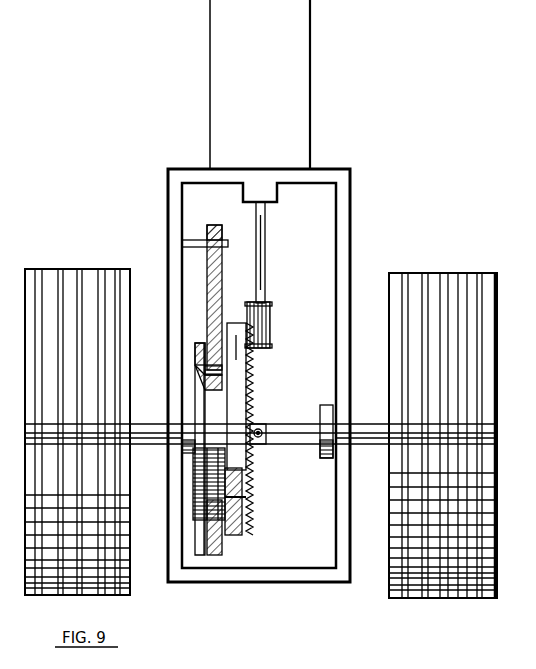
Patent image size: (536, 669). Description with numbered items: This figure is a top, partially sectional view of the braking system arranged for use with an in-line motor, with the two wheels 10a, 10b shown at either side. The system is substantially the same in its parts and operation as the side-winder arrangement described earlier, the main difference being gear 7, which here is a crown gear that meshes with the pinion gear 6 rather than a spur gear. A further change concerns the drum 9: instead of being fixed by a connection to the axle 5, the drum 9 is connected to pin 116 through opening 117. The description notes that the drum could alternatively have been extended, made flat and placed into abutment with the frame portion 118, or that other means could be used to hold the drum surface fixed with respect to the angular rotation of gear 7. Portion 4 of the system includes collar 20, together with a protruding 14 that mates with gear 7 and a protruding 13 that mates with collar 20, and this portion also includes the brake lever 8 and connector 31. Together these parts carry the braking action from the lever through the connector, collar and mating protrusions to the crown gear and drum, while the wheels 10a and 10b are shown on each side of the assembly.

The portion 4 is at (293, 48).
The frame portion 118 is at (203, 176).
The pin 116 is at (193, 243).
The opening 117 is at (222, 240).
The axle 5 is at (265, 258).
The drum 9 is at (222, 287).
The protruding 13 is at (200, 343).
The pinion gear 6 is at (270, 322).
The brake lever 8 is at (223, 392).
The gear 7 is at (246, 388).
The connector 31 is at (262, 430).
The protruding 14 is at (240, 500).
The collar 20 is at (203, 513).
The wheel 10a is at (73, 282).
The wheel 10b is at (450, 288).